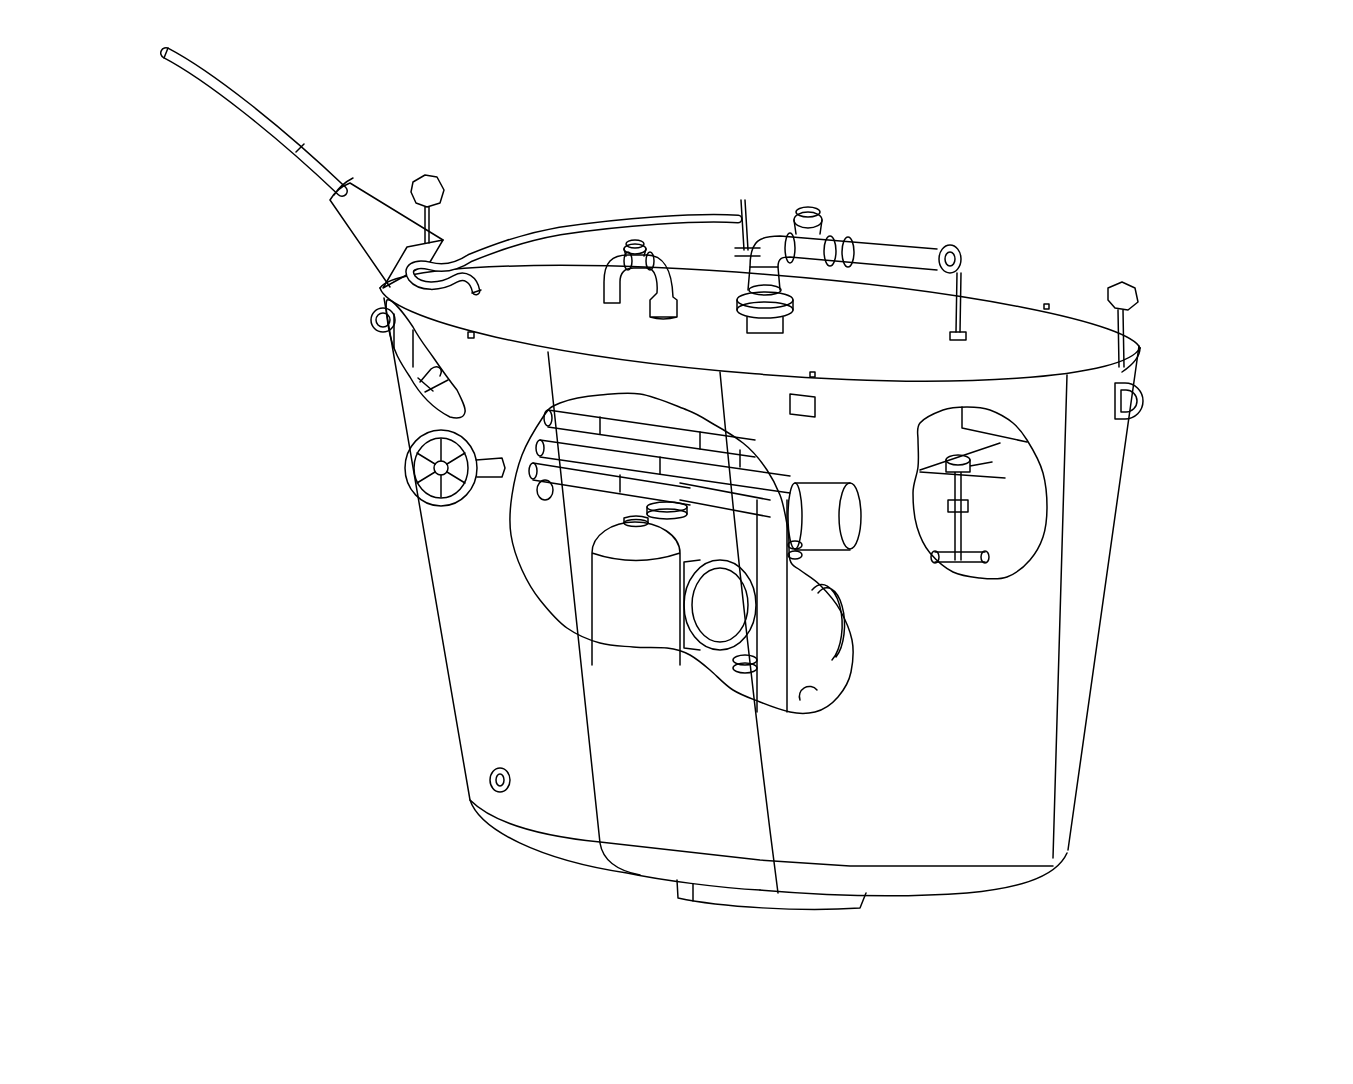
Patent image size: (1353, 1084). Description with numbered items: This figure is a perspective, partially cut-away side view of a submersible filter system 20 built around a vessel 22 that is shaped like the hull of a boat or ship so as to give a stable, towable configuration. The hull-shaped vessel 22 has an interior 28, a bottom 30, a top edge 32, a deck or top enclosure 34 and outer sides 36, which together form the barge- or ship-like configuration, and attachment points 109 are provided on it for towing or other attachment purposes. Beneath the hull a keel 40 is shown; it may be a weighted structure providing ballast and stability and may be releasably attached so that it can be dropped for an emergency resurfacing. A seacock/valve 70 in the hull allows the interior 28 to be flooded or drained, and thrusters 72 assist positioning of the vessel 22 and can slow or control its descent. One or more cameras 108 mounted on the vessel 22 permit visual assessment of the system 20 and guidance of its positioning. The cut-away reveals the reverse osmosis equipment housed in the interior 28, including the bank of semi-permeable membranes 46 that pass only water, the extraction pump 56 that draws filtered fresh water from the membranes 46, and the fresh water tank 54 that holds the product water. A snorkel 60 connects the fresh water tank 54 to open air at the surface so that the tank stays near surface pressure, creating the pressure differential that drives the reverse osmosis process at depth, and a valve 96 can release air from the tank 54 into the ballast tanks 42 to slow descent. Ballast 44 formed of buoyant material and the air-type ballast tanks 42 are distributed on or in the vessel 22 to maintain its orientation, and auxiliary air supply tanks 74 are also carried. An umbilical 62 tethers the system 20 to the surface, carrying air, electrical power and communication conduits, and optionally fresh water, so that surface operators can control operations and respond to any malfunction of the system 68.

The filter system 20 is at (806, 166).
The vessel 22 is at (452, 713).
The interior 28 is at (532, 540).
The bottom 30 is at (968, 892).
The top edge 32 is at (1132, 340).
The deck 34 is at (993, 313).
The outer sides 36 is at (1018, 810).
The keel 40 is at (677, 893).
The ballast tanks 42 is at (400, 403).
The ballast 44 is at (407, 350).
The semi-permeable membranes 46 is at (712, 495).
The fresh water tank 54 is at (800, 635).
The extraction pump 56 is at (770, 628).
The snorkel 60 is at (164, 52).
The umbilical 62 is at (250, 100).
The system 68 is at (817, 410).
The seacock/valve 70 is at (492, 790).
The thrusters 72 is at (410, 470).
The auxiliary air supply tanks 74 is at (622, 607).
The valve 96 is at (603, 500).
The cameras 108 is at (433, 177).
The attachment points 109 is at (373, 313).